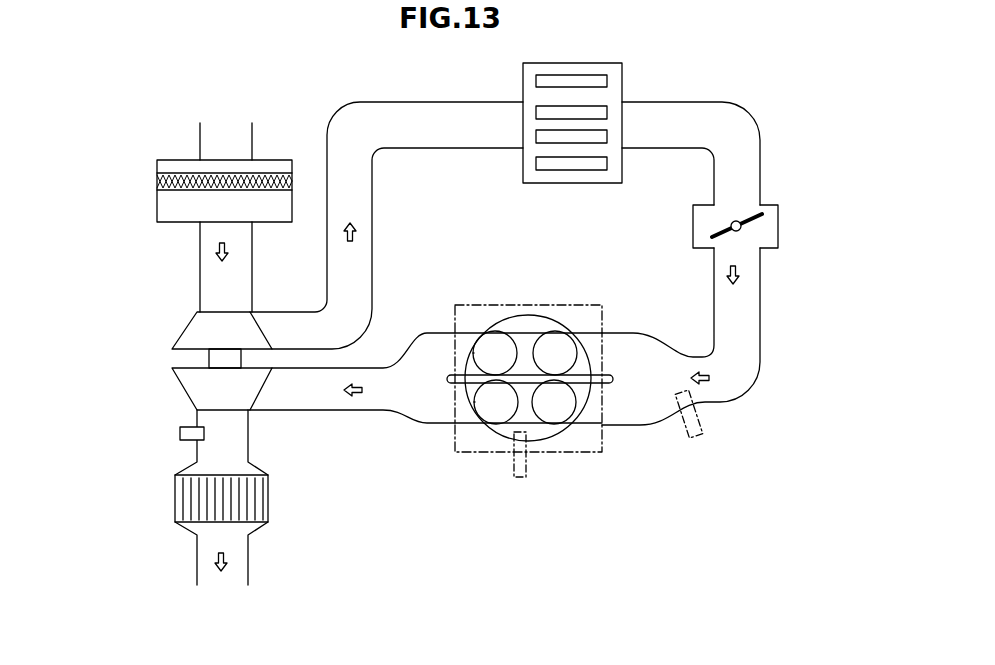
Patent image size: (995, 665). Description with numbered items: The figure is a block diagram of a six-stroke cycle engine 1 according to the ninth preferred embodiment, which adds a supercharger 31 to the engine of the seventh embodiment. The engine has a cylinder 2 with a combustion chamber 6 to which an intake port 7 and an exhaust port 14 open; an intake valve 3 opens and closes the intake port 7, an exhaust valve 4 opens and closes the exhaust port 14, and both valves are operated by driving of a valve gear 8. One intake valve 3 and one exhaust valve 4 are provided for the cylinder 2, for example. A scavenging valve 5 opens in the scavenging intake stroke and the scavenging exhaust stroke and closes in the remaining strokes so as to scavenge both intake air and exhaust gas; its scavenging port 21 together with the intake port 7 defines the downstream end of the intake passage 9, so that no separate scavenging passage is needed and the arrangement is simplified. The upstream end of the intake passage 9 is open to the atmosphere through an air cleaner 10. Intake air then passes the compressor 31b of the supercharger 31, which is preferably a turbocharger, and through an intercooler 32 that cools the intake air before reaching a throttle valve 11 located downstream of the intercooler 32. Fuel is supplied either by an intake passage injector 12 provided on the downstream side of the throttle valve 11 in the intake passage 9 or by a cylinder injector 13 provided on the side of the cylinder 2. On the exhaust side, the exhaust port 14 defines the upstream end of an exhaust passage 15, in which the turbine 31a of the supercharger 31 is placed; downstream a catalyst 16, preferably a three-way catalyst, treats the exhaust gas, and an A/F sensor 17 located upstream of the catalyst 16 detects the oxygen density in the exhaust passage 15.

The six-stroke cycle engine 1 is at (107, 118).
The cylinder 2 is at (488, 357).
The intake valve 3 is at (571, 430).
The exhaust valve 4 is at (482, 398).
The scavenging valve 5 is at (552, 345).
The combustion chamber 6 is at (553, 408).
The intake port 7 is at (597, 427).
The valve gear 8 is at (494, 430).
The intake passage 9 is at (740, 167).
The air cleaner 10 is at (157, 190).
The throttle valve 11 is at (745, 222).
The intake passage injector 12 is at (697, 437).
The cylinder injector 13 is at (520, 478).
The exhaust port 14 is at (460, 350).
The exhaust passage 15 is at (310, 393).
The catalyst 16 is at (190, 500).
The A/F sensor 17 is at (180, 432).
The scavenging port 21 is at (617, 350).
The supercharger 31 is at (172, 336).
The turbine 31a is at (193, 397).
The compressor 31b is at (192, 338).
The intercooler 32 is at (523, 83).